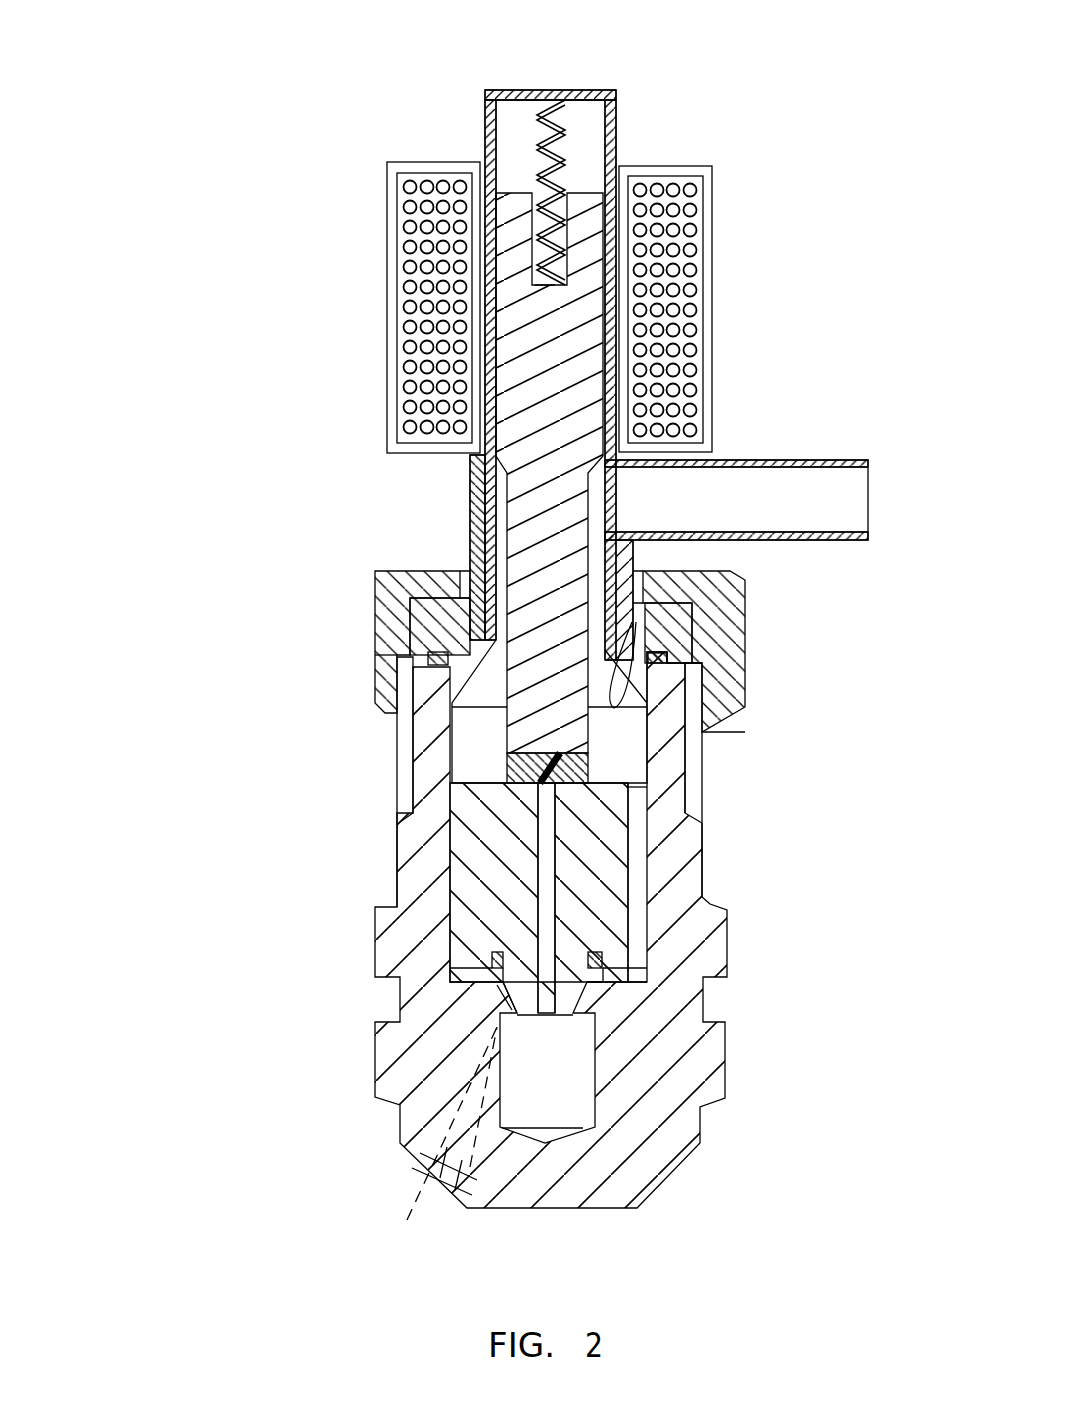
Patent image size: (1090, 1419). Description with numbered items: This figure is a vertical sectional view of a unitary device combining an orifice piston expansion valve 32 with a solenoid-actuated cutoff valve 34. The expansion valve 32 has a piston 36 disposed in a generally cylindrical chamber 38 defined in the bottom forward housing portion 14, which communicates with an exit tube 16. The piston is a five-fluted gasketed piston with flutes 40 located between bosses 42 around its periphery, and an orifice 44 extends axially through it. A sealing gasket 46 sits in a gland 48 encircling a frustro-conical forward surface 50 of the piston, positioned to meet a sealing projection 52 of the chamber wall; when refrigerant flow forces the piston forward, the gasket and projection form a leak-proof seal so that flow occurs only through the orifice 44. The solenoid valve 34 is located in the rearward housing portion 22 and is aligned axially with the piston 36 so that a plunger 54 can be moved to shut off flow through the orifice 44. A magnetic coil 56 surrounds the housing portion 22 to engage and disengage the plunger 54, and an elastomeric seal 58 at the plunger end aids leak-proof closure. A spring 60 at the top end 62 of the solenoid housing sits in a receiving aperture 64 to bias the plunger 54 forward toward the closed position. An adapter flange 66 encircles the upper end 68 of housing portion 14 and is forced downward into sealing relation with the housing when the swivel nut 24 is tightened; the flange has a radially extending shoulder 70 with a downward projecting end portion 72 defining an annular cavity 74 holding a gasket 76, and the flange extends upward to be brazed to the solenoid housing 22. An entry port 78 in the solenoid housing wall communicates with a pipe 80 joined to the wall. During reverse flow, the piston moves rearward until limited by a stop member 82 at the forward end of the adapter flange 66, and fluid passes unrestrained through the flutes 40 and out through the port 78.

The bottom forward housing portion 14 is at (415, 882).
The exit tube 16 is at (410, 1215).
The rearward housing portion 22 is at (490, 400).
The swivel nut 24 is at (375, 650).
The orifice piston expansion valve 32 is at (647, 893).
The solenoid-actuated cutoff valve 34 is at (515, 406).
The piston 36 is at (655, 718).
The cylindrical chamber 38 is at (637, 790).
The flutes 40 is at (637, 857).
The bosses 42 is at (470, 943).
The orifice 44 is at (545, 822).
The sealing gasket 46 is at (640, 952).
The gland 48 is at (600, 962).
The frustro-conical forward surface 50 is at (497, 985).
The sealing projection 52 is at (492, 968).
The armature plunger 54 is at (550, 535).
The magnetic coil 56 is at (680, 280).
The elastomeric seal 58 is at (535, 758).
The spring 60 is at (565, 128).
The top end 62 is at (522, 92).
The receiving aperture 64 is at (617, 195).
The adapter flange 66 is at (442, 625).
The upper end of housing portion 68 is at (660, 693).
The radially extending shoulder 70 is at (413, 632).
The downward projecting end portion 72 is at (385, 668).
The annular cavity 74 is at (655, 655).
The gasket 76 is at (417, 633).
The entry port 78 is at (593, 488).
The pipe 80 is at (852, 462).
The stop member 82 is at (615, 705).